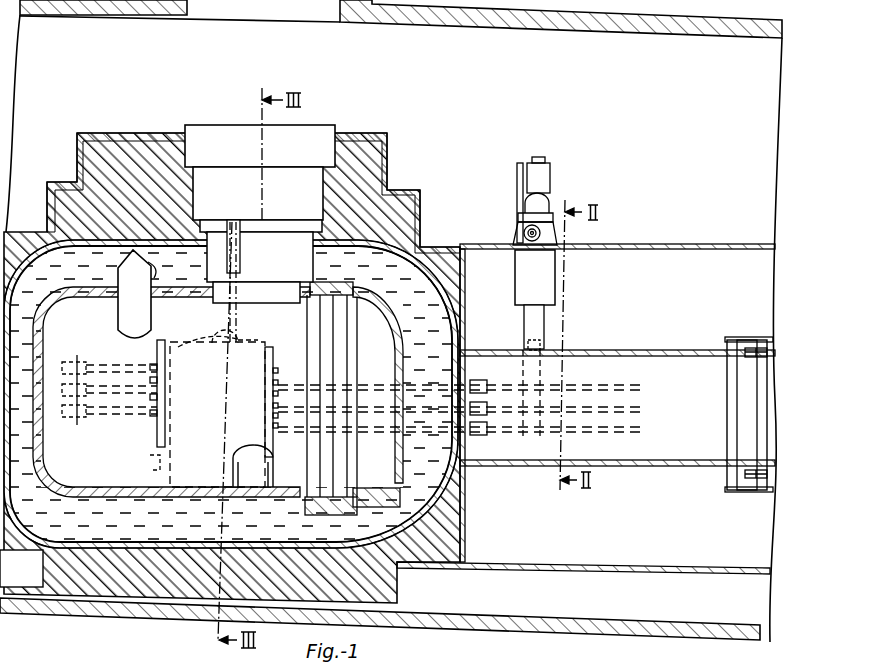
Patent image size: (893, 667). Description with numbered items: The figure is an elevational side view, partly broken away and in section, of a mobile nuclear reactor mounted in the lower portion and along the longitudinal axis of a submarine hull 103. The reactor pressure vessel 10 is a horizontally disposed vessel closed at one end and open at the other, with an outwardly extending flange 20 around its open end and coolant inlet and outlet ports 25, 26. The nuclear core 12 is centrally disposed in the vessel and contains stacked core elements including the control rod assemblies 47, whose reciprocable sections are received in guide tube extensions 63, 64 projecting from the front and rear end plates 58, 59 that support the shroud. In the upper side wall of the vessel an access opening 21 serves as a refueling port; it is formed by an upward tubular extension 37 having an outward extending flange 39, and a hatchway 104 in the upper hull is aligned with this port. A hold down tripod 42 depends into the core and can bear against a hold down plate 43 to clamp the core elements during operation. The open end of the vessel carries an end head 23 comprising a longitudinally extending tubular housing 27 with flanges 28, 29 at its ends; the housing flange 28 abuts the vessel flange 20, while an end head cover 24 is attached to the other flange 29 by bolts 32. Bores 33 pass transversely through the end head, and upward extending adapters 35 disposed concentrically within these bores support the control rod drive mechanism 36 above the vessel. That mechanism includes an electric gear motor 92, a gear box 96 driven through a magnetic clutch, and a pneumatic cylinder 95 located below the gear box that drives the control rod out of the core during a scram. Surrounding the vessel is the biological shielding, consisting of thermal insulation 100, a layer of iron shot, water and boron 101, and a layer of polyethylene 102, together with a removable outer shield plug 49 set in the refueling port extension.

The reactor pressure vessel 10 is at (82, 303).
The nuclear core 12 is at (193, 449).
The flange 20 is at (323, 290).
The access opening 21 is at (240, 399).
The end head 23 is at (415, 496).
The end head cover 24 is at (751, 345).
The coolant inlet port 25 is at (268, 462).
The coolant outlet port 26 is at (148, 328).
The tubular housing 27 is at (630, 363).
The housing flange 28 is at (362, 284).
The housing flange 29 is at (743, 338).
The bolts 32 is at (757, 357).
The bores 33 is at (541, 343).
The adapters 35 is at (523, 320).
The control rod drive mechanism 36 is at (550, 174).
The tubular extension 37 is at (318, 215).
The flange 39 is at (200, 226).
The hold down tripod 42 is at (240, 326).
The hold down plate 43 is at (262, 342).
The control rod assemblies 47 is at (641, 390).
The outer shield plug 49 is at (335, 134).
The front end plate 58 is at (273, 437).
The rear end plate 59 is at (150, 460).
The guide tube extensions 63 is at (383, 395).
The guide tube extensions 64 is at (115, 366).
The electric gear motor 92 is at (545, 162).
The pneumatic cylinder 95 is at (522, 232).
The gear box 96 is at (525, 200).
The thermal insulation 100 is at (143, 497).
The layer of iron shot, water and boron 101 is at (421, 282).
The layer of polyethylene 102 is at (420, 215).
The submarine hull 103 is at (472, 27).
The hatchway 104 is at (340, 23).